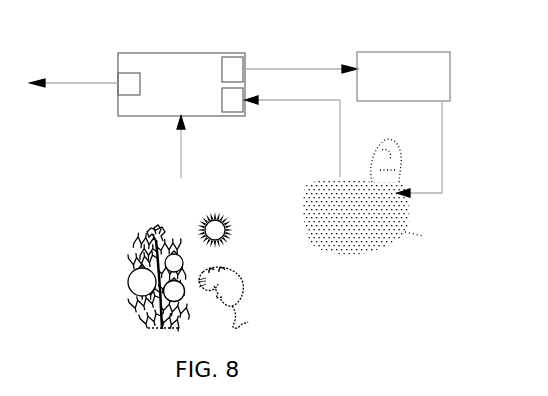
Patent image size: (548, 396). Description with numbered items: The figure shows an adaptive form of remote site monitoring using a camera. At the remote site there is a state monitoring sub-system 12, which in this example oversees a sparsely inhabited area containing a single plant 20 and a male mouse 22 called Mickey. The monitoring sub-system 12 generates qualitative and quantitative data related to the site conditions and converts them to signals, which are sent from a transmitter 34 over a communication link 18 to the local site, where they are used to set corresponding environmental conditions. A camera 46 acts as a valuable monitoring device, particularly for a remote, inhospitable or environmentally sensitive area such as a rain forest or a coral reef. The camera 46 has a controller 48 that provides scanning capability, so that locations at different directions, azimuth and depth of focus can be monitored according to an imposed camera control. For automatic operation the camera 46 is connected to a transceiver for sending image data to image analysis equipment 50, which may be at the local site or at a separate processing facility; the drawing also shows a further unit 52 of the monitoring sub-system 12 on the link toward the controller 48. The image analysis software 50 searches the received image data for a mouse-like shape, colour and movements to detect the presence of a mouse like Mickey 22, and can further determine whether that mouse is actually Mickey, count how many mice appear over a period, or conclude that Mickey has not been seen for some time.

The state monitoring sub-system 12 is at (193, 53).
The communication link 18 is at (89, 82).
The plant 20 is at (135, 270).
The male mouse 22 is at (230, 287).
The transmitter 34 is at (127, 88).
The camera 46 is at (352, 233).
The controller 48 is at (383, 72).
The image analysis equipment 50 is at (228, 102).
The transmitter 52 is at (307, 68).